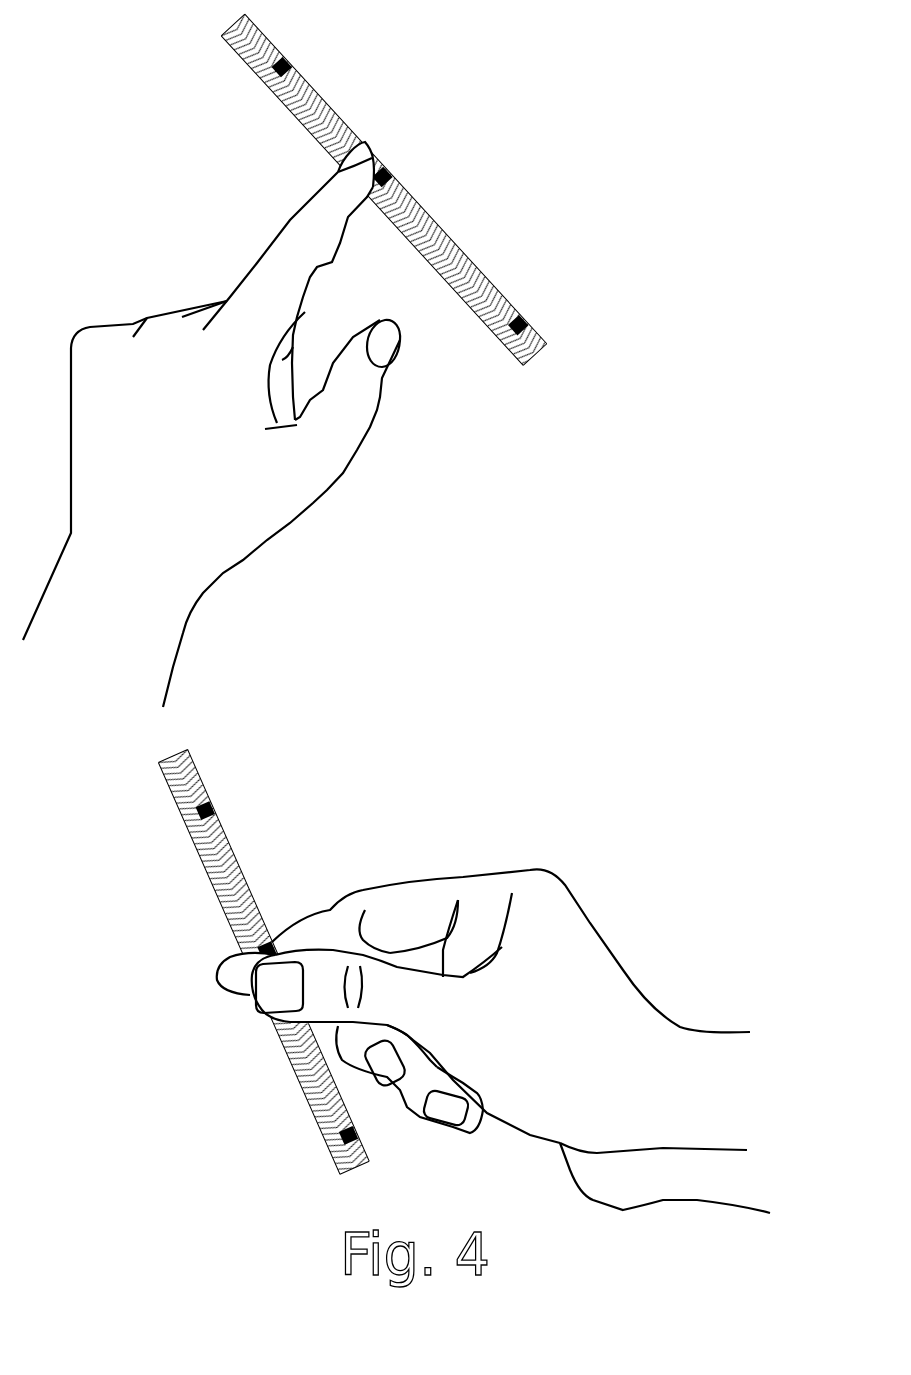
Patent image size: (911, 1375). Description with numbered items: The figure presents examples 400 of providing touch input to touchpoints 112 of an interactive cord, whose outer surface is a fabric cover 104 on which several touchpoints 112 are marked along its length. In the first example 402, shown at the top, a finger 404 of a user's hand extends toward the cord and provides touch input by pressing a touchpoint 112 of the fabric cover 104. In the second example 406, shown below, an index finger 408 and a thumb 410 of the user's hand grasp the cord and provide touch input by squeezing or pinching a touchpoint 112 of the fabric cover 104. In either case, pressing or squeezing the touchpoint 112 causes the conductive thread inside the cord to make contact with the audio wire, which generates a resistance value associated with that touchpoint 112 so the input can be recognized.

The fabric cover 104 is at (238, 52).
The touchpoint 112 is at (383, 167).
The examples of providing touch input 400 is at (408, 613).
The pressing example 402 is at (267, 374).
The finger 404 is at (287, 227).
The squeezing example 406 is at (450, 954).
The index finger 408 is at (246, 965).
The thumb 410 is at (287, 992).